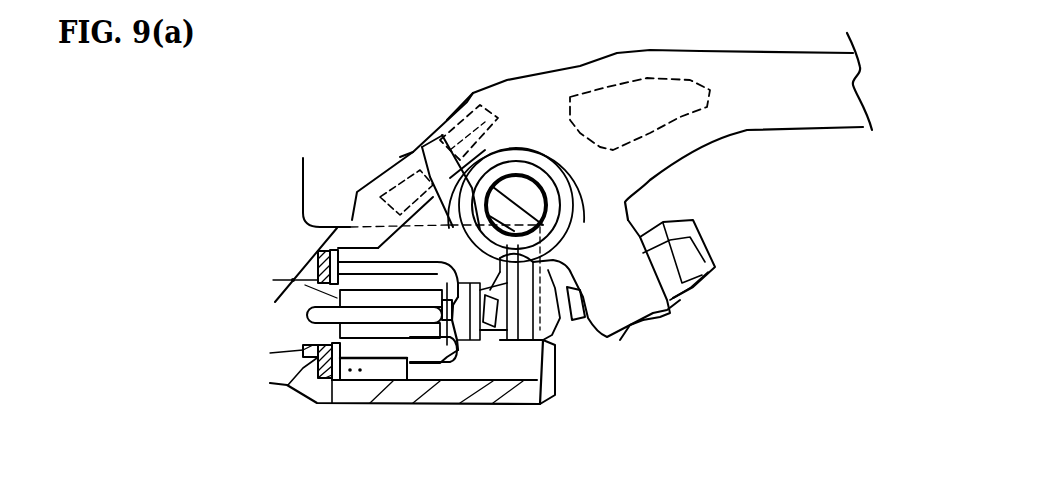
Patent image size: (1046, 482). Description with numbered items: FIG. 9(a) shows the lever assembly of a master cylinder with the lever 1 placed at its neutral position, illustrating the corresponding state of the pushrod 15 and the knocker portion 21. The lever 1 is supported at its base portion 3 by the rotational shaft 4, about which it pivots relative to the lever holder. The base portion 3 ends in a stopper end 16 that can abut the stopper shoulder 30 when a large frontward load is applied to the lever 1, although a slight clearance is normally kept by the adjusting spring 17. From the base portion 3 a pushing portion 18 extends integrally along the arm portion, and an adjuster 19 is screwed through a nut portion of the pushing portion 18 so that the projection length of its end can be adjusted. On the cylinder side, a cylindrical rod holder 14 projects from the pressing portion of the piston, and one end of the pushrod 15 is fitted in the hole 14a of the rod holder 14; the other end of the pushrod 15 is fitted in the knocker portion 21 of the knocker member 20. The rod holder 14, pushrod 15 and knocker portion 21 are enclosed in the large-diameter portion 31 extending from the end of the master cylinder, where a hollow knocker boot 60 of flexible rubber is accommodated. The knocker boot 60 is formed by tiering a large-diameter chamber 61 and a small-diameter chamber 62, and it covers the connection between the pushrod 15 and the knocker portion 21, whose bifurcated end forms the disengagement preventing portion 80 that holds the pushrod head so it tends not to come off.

The lever 1 is at (743, 58).
The base portion 3 is at (565, 157).
The rotational shaft 4 is at (523, 175).
The cylindrical rod holder 14 is at (403, 370).
The hole 14a is at (297, 277).
The pushrod 15 is at (313, 327).
The stopper end 16 is at (443, 117).
The adjusting spring 17 is at (430, 138).
The pushing portion 18 is at (667, 313).
The adjuster 19 is at (713, 240).
The knocker member 20 is at (573, 332).
The knocker portion 21 is at (558, 335).
The stopper shoulder 30 is at (413, 153).
The large-diameter portion 31 is at (517, 397).
The knocker boot 60 is at (440, 381).
The large-diameter chamber 61 is at (367, 387).
The small-diameter chamber 62 is at (458, 373).
The disengagement preventing portion 80 is at (543, 390).